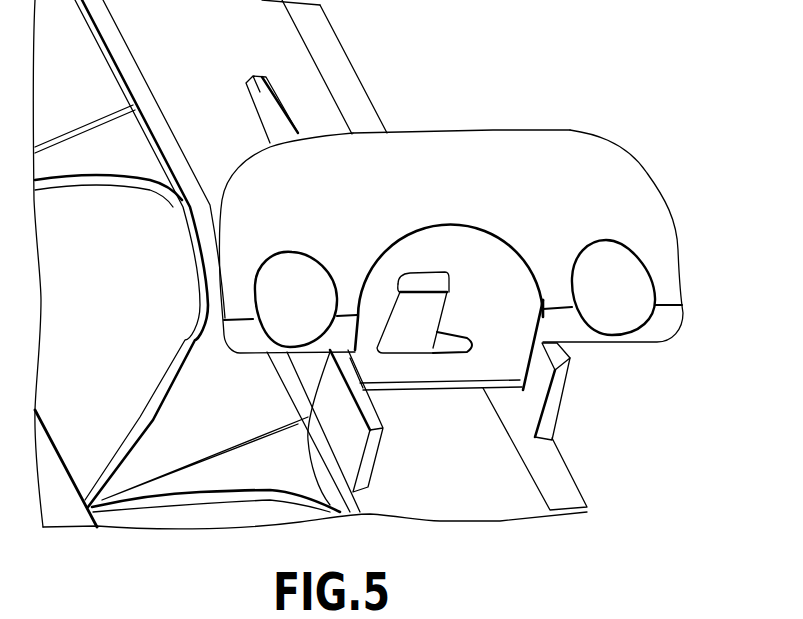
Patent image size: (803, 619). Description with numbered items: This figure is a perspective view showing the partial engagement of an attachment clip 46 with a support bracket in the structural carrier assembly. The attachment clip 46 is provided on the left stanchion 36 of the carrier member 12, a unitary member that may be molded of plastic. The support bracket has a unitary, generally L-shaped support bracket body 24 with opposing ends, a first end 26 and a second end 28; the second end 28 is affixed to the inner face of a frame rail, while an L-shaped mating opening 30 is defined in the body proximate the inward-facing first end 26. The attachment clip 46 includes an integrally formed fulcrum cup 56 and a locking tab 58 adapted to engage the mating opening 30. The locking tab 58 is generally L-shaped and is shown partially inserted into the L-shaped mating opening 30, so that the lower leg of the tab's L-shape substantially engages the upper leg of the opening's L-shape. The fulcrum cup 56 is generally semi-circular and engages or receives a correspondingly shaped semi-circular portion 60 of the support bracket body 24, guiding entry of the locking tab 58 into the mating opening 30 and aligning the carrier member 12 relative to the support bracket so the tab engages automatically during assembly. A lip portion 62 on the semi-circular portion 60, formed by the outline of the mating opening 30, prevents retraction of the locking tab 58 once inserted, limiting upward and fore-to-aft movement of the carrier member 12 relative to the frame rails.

The carrier member 12 is at (333, 52).
The support bracket body 24 is at (650, 170).
The second end 28 is at (493, 130).
The lip portion 62 is at (455, 297).
The semi-circular portion 60 is at (517, 308).
The locking tab 58 is at (412, 282).
The mating opening 30 is at (442, 350).
The first end 26 is at (397, 398).
The attachment clip 46 is at (572, 377).
The fulcrum cup 56 is at (537, 393).
The left stanchion 36 is at (522, 505).